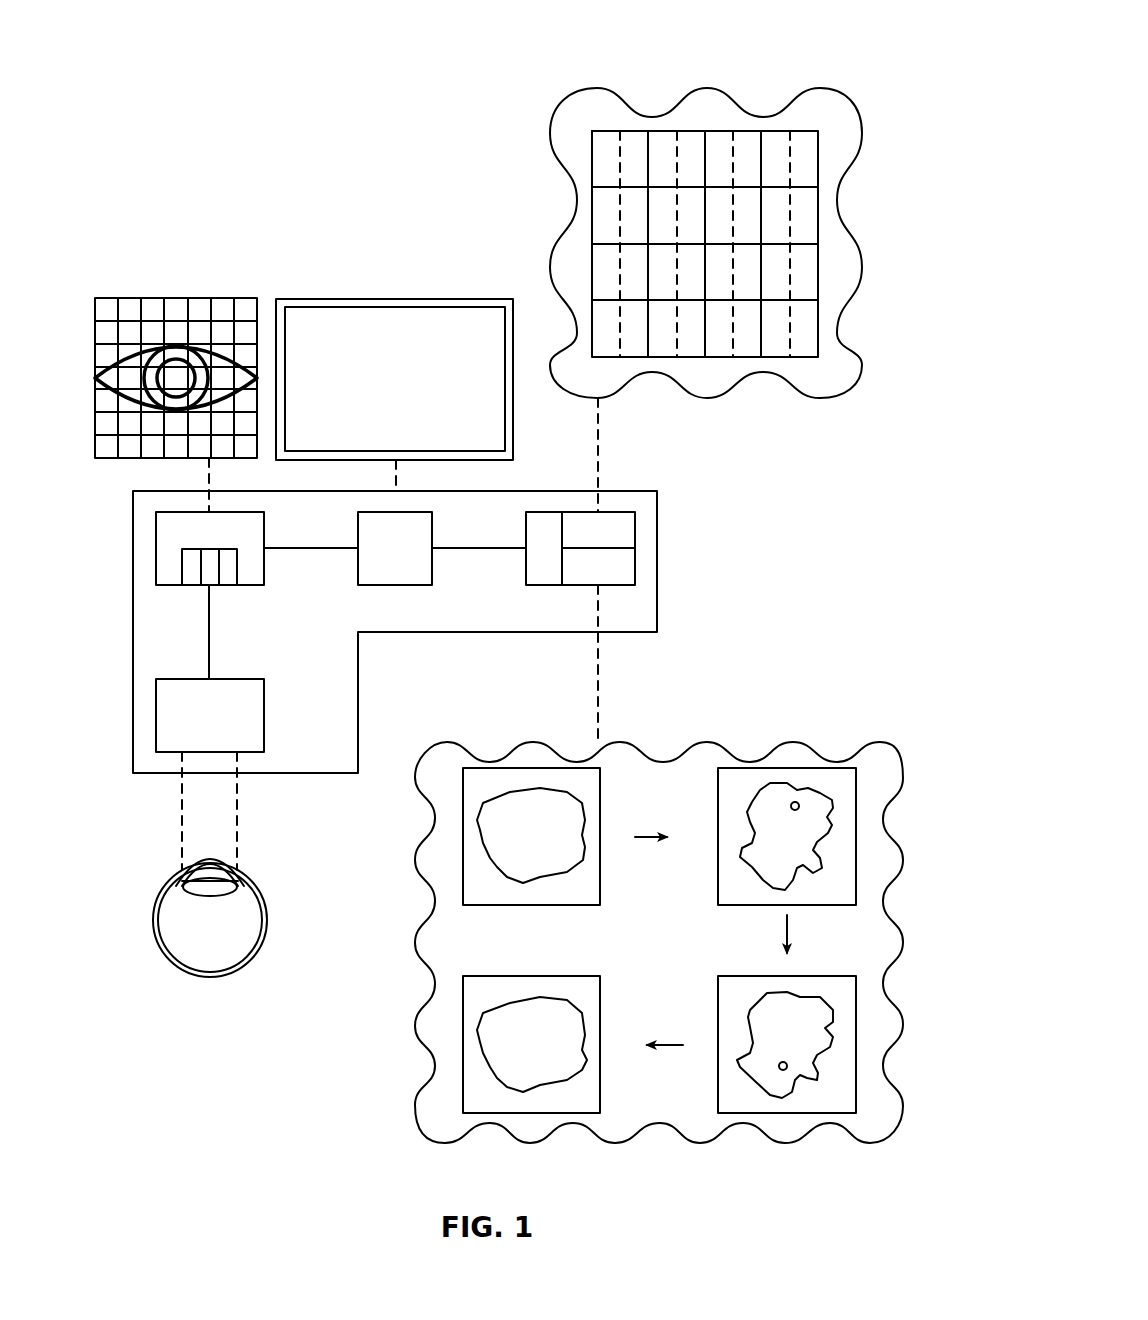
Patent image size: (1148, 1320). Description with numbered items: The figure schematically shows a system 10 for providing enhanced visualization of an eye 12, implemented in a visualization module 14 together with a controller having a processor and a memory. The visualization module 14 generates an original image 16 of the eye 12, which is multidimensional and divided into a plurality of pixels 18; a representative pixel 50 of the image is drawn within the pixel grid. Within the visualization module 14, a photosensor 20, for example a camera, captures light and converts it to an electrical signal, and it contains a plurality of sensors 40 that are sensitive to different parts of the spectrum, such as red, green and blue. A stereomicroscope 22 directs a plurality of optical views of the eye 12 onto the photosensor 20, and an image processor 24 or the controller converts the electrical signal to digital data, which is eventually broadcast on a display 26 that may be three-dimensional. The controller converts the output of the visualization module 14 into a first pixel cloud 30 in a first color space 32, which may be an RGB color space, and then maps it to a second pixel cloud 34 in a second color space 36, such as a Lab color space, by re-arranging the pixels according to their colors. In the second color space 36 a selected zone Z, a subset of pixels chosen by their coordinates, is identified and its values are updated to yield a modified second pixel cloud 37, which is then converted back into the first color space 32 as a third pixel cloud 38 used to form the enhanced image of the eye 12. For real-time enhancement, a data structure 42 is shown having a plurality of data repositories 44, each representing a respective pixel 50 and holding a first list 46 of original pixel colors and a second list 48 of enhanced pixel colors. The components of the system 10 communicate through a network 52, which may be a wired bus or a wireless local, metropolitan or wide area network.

The system 10 is at (397, 133).
The eye 12 is at (160, 868).
The visualization module 14 is at (125, 758).
The original image 16 is at (179, 289).
The plurality of pixels 18 is at (126, 430).
The photosensor 20 is at (264, 569).
The stereomicroscope 22 is at (156, 715).
The image processor 24 is at (393, 585).
The display 26 is at (408, 290).
The first pixel cloud 30 is at (488, 864).
The first color space 32 is at (463, 833).
The second pixel cloud 34 is at (824, 851).
The second color space 36 is at (857, 838).
The modified second pixel cloud 37 is at (824, 1059).
The third pixel cloud 38 is at (488, 1072).
The plurality of sensors 40 is at (182, 567).
The data structure 42 is at (597, 112).
The data repository 44 is at (679, 117).
The first list 46 is at (662, 148).
The second list 48 is at (693, 148).
The pixel 50 is at (146, 348).
The network 52 is at (738, 475).
The selected zone Z is at (798, 801).